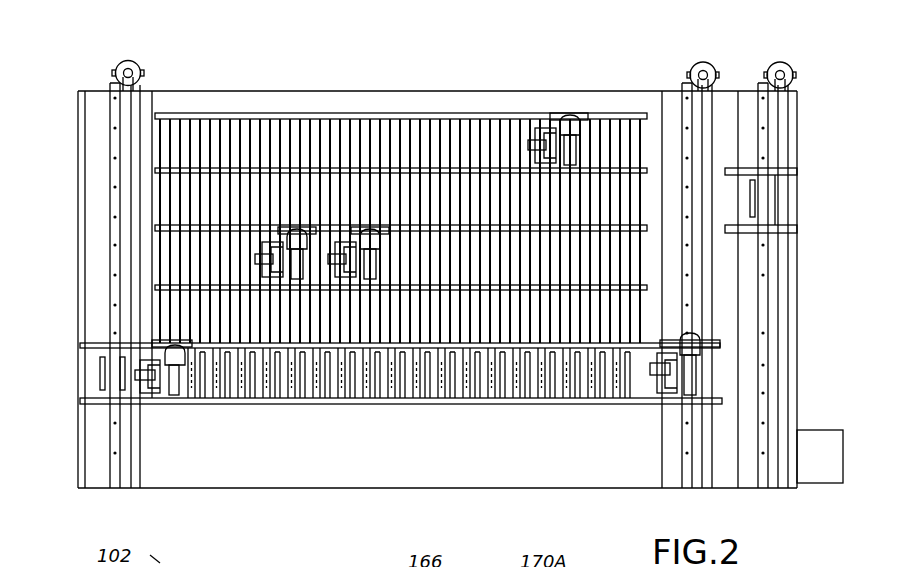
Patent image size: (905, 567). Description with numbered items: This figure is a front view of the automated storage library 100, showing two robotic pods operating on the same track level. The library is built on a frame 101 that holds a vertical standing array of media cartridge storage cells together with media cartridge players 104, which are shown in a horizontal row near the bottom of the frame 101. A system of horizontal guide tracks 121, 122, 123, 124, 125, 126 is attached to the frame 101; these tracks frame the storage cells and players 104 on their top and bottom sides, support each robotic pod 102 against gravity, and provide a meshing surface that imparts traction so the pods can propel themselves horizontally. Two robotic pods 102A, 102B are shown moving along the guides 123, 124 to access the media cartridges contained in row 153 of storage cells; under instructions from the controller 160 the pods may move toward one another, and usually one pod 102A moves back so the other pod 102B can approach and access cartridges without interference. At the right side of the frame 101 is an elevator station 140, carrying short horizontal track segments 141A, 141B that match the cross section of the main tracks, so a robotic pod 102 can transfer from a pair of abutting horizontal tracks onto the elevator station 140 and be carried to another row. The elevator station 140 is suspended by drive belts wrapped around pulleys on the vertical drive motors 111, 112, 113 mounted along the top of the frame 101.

The automated storage library 100 is at (573, 49).
The frame 101 is at (423, 91).
The robotic pod 102 is at (572, 112).
The robotic pod 102A is at (298, 280).
The robotic pod 102B is at (373, 280).
The media cartridge player 104 is at (447, 390).
The vertical drive motor 111 is at (141, 70).
The vertical drive motor 112 is at (705, 61).
The vertical drive motor 113 is at (783, 61).
The horizontal guide track 121 is at (155, 117).
The horizontal guide track 122 is at (155, 171).
The horizontal guide track 123 is at (155, 229).
The horizontal guide track 124 is at (155, 288).
The horizontal guide track 125 is at (80, 345).
The horizontal guide track 126 is at (80, 403).
The elevator station 140 is at (791, 193).
The elevator track segment 141A is at (790, 170).
The elevator track segment 141B is at (795, 232).
The row 153 is at (157, 259).
The controller 160 is at (815, 433).